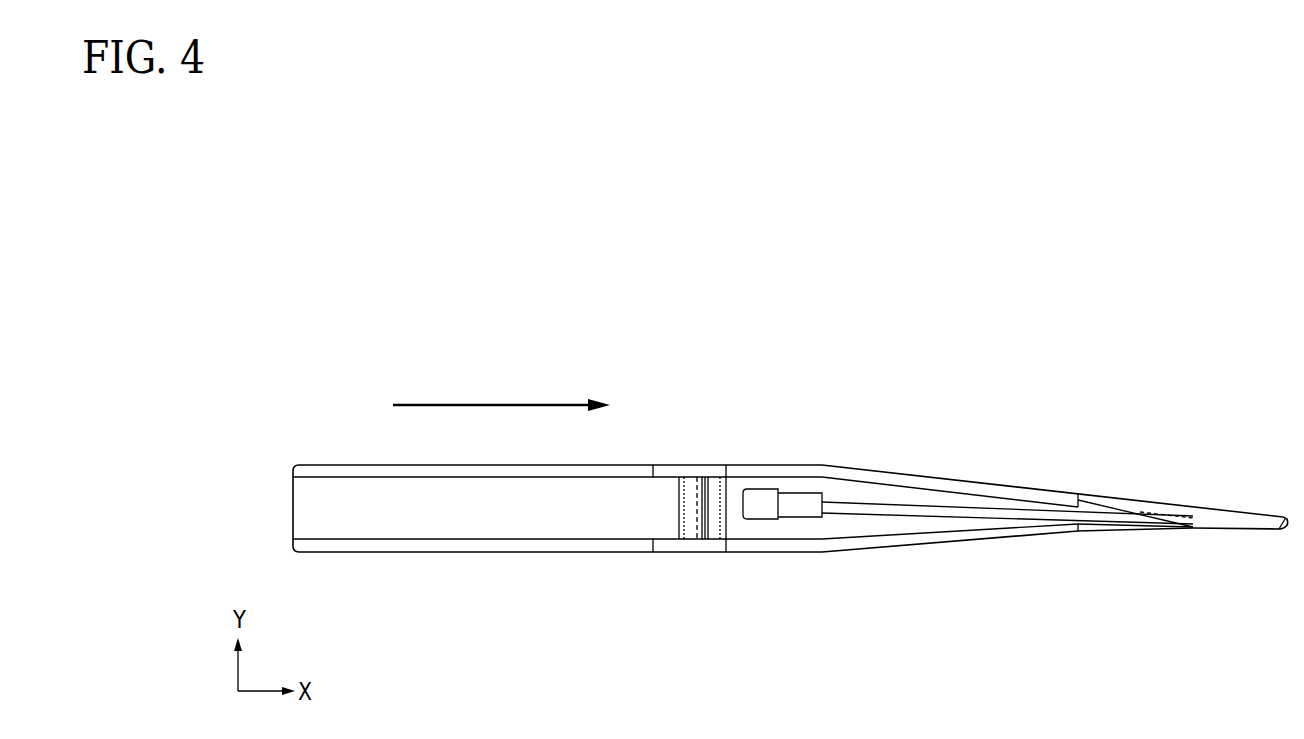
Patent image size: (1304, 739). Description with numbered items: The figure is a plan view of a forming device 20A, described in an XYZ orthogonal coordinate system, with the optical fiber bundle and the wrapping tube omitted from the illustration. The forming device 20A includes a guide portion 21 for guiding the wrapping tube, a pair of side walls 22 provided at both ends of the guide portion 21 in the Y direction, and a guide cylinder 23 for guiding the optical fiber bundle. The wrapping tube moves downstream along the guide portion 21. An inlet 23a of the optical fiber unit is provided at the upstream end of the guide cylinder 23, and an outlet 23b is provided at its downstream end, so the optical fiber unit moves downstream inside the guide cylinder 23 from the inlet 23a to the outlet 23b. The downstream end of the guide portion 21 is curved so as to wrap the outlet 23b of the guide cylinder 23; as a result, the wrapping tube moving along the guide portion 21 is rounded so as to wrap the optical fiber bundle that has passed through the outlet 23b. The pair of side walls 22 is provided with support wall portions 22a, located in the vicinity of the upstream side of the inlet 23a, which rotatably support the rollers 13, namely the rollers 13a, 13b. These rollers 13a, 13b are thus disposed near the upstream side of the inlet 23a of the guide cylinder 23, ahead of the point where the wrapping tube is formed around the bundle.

The forming device 20A is at (463, 352).
The guide portion 21 is at (368, 512).
The pair of side walls 22 is at (447, 546).
The support wall portion 22a is at (668, 553).
The roller 13 is at (718, 458).
The roller 13a is at (688, 485).
The roller 13b is at (721, 538).
The guide cylinder 23 is at (921, 488).
The inlet 23a is at (744, 512).
The outlet 23b is at (1193, 531).